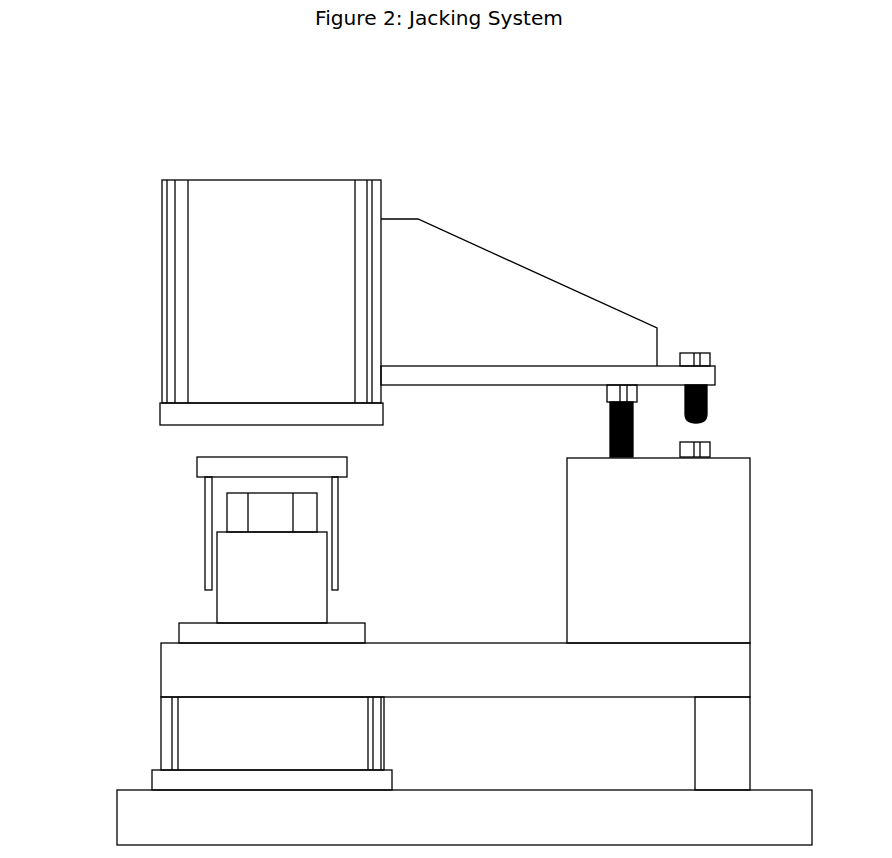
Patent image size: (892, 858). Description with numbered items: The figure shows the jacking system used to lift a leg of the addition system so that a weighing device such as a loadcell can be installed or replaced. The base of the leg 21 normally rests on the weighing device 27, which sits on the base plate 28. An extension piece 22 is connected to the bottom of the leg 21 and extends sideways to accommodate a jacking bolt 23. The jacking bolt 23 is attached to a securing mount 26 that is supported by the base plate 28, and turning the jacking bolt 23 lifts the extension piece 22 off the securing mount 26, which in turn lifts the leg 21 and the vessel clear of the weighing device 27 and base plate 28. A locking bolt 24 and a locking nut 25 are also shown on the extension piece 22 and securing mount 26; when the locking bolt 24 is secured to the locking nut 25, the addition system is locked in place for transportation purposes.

The leg 21 is at (162, 370).
The extension piece 22 is at (535, 272).
The jacking bolt 23 is at (637, 417).
The locking bolt 24 is at (710, 397).
The locking nut 25 is at (712, 450).
The securing mount 26 is at (750, 548).
The weighing device 27 is at (215, 553).
The base plate 28 is at (117, 818).